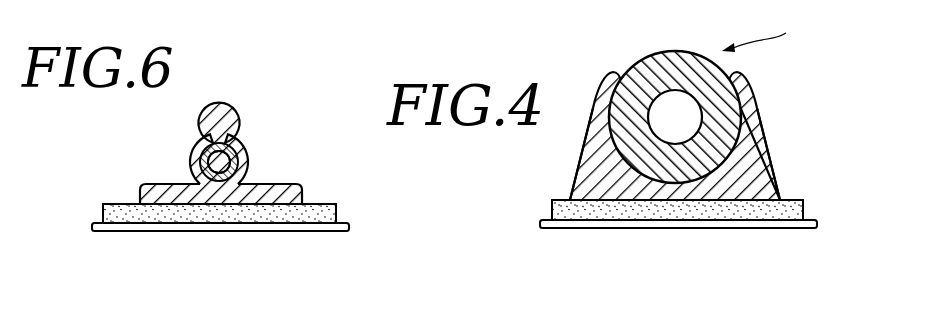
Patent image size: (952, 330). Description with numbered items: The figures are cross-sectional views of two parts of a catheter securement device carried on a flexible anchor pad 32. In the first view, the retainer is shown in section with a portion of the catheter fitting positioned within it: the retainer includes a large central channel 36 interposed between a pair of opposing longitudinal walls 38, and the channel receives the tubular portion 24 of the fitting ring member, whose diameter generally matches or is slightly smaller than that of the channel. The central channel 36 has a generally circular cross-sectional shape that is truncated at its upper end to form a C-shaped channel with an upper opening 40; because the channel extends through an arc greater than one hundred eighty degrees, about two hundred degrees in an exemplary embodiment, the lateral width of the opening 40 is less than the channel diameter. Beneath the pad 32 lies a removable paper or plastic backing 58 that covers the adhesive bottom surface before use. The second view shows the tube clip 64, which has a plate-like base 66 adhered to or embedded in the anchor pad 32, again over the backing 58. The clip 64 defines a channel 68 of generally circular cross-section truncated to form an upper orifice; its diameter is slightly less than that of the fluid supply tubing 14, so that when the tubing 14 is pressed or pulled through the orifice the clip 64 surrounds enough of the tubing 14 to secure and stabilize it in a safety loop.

In FIG. 6, the fluid supply tubing 14 is at (219, 136).
In FIG. 4, the tubular portion 24 is at (675, 54).
In FIG. 6, the pad 32 is at (337, 210).
In FIG. 4, the pad 32 is at (803, 207).
In FIG. 4, the central channel 36 is at (743, 135).
In FIG. 4, the longitudinal walls 38 is at (587, 144).
In FIG. 4, the upper opening 40 is at (770, 32).
In FIG. 6, the backing 58 is at (348, 226).
In FIG. 4, the backing 58 is at (817, 226).
In FIG. 6, the tube clip 64 is at (183, 163).
In FIG. 6, the plate-like base 66 is at (279, 187).
In FIG. 6, the channel 68 is at (222, 137).